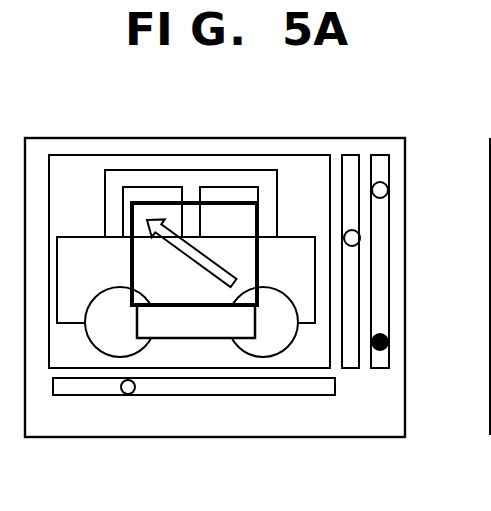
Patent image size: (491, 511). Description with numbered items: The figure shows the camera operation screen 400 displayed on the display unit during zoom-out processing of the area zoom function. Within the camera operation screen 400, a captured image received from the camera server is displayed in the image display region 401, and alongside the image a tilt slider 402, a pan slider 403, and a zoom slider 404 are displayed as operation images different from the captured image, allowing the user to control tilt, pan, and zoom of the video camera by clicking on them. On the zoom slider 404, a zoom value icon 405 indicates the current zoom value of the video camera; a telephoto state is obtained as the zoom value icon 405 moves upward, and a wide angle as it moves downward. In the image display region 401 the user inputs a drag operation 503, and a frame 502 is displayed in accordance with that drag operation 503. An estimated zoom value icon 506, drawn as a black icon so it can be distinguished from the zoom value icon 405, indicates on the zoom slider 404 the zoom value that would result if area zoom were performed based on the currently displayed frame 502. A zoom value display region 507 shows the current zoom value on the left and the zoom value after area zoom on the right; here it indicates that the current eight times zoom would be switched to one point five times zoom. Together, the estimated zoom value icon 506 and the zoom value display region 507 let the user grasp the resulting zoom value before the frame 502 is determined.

The camera operation screen 400 is at (277, 138).
The image display region 401 is at (153, 155).
The tilt slider 402 is at (348, 155).
The pan slider 403 is at (278, 397).
The zoom slider 404 is at (389, 162).
The zoom value icon 405 is at (388, 185).
The frame 502 is at (143, 202).
The drag operation 503 is at (187, 248).
The estimated zoom value icon 506 is at (388, 342).
The zoom value display region 507 is at (185, 338).